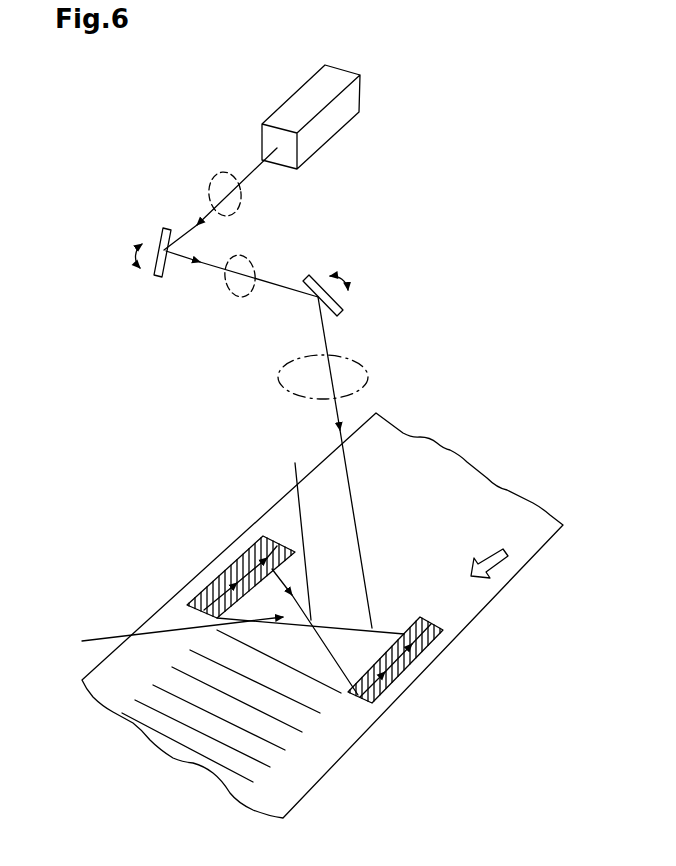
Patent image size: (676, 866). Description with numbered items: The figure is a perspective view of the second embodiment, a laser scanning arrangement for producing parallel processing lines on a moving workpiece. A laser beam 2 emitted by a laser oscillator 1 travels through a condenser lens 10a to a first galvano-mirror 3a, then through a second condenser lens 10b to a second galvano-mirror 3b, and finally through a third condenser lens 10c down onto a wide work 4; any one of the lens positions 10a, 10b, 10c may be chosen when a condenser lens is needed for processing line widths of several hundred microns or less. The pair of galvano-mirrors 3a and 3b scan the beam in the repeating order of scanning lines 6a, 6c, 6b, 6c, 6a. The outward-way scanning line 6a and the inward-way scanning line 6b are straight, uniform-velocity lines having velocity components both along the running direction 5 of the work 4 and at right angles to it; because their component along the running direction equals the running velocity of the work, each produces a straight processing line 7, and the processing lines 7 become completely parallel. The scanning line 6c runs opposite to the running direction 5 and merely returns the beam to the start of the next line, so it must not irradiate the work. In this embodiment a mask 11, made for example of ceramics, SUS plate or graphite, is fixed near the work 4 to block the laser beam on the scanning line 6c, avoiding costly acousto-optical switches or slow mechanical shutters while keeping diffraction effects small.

The laser oscillator 1 is at (352, 110).
The laser beam 2 is at (258, 173).
The galvano-mirror 3a is at (157, 276).
The galvano-mirror 3b is at (343, 308).
The work 4 is at (478, 595).
The running direction 5 is at (500, 562).
The scanning line 6a is at (299, 527).
The scanning line 6b is at (227, 636).
The scanning line 6c is at (253, 563).
The processing line 7 is at (302, 732).
The condenser lens 10a is at (210, 183).
The condenser lens 10b is at (248, 255).
The condenser lens 10c is at (284, 383).
The mask 11 is at (208, 582).